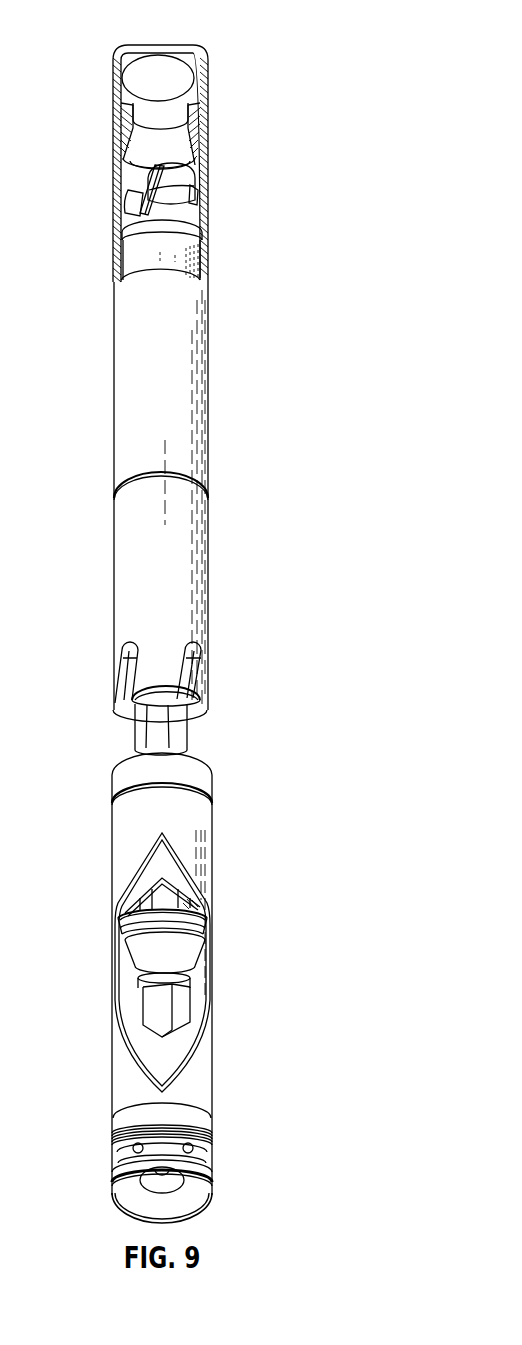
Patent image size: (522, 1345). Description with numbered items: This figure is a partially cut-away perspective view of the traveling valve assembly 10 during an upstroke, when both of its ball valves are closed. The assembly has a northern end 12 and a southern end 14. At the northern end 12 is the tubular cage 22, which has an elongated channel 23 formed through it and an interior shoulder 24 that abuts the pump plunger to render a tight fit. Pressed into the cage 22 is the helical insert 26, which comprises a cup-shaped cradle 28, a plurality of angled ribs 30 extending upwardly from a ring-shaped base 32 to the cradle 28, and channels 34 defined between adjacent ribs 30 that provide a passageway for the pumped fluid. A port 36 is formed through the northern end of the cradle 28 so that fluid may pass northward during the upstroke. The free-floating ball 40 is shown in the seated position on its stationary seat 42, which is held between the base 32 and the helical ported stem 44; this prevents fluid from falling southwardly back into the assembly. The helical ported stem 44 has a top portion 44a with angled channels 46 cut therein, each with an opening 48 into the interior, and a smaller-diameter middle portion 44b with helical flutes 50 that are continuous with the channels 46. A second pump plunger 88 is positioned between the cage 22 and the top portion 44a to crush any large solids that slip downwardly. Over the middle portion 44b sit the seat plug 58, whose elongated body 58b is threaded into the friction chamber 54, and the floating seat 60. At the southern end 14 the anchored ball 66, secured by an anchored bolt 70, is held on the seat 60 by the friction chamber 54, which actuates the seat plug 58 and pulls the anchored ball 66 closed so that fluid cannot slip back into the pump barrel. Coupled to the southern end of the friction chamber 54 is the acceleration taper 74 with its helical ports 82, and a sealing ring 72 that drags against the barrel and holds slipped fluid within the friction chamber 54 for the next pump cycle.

The traveling valve assembly 10 is at (240, 46).
The northern end 12 is at (270, 132).
The southern end 14 is at (223, 1139).
The cage 22 is at (114, 145).
The elongated channel 23 is at (163, 60).
The shoulder 24 is at (118, 103).
The helical insert 26 is at (108, 242).
The cradle 28 is at (175, 185).
The ribs 30 is at (140, 180).
The base 32 is at (198, 237).
The channels 34 is at (190, 210).
The port 36 is at (210, 140).
The free-floating ball 40 is at (152, 208).
The seat 42 is at (197, 254).
The helical ported stem 44 is at (117, 739).
The top portion 44a is at (192, 552).
The middle portion 44b is at (178, 727).
The channels 46 is at (193, 688).
The opening 48 is at (185, 662).
The helical flutes 50 is at (123, 910).
The friction chamber 54 is at (212, 1028).
The seat plug 58 is at (203, 780).
The elongated body 58b is at (168, 860).
The seat 60 is at (182, 958).
The anchored ball 66 is at (193, 961).
The anchored bolt 70 is at (143, 990).
The sealing ring 72 is at (202, 1130).
The acceleration taper 74 is at (106, 1162).
The helical ports 82 is at (115, 1145).
The second pump plunger 88 is at (180, 383).